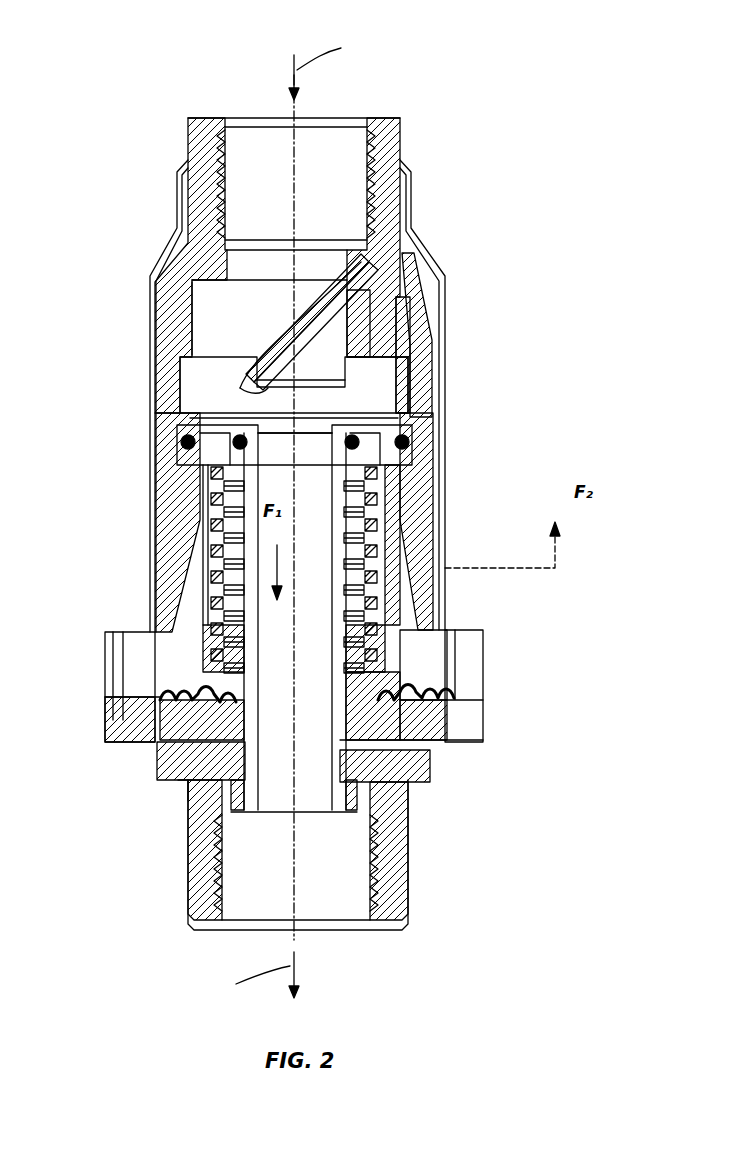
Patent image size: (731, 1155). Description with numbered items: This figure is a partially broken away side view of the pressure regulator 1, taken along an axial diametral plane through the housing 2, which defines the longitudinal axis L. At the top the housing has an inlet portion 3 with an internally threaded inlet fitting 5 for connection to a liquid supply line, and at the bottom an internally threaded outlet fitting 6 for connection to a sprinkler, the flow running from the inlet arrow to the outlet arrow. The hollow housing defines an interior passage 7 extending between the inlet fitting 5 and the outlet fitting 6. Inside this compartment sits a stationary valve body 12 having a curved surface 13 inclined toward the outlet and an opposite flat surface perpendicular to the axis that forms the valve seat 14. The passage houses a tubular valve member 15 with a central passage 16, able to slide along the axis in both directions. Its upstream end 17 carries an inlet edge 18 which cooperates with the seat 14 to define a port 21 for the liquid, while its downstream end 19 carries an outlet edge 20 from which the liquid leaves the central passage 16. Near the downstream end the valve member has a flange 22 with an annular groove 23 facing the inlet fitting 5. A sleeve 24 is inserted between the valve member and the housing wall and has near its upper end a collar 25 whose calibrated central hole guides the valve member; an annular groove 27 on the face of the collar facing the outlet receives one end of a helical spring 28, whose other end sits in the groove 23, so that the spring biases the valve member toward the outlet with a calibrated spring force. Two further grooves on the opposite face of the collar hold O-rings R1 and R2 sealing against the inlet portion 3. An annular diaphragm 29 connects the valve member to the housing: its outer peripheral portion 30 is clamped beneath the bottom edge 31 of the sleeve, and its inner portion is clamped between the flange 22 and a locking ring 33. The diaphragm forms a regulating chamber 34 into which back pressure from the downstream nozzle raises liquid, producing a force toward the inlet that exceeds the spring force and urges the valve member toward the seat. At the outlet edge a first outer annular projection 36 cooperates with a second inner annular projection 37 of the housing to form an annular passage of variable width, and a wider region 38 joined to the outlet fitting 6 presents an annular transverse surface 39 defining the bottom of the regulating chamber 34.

The pressure regulator 1 is at (448, 122).
The housing 2 is at (178, 168).
The inlet portion 3 is at (165, 255).
The inlet fitting 5 is at (370, 150).
The outlet fitting 6 is at (352, 906).
The interior passage 7 is at (233, 321).
The stationary valve body 12 is at (337, 331).
The curved surface 13 is at (262, 345).
The valve seat 14 is at (398, 346).
The tubular valve member 15 is at (350, 522).
The central passage 16 is at (326, 693).
The upstream end 17 is at (400, 484).
The inlet edge 18 is at (395, 408).
The downstream end 19 is at (328, 794).
The outlet edge 20 is at (363, 865).
The port 21 is at (257, 402).
The flange 22 is at (175, 688).
The annular groove 23 is at (192, 694).
The sleeve 24 is at (175, 593).
The collar 25 is at (210, 465).
The annular groove 27 is at (200, 485).
The helical spring 28 is at (215, 536).
The annular diaphragm 29 is at (110, 733).
The outer peripheral portion 30 is at (445, 690).
The bottom edge 31 is at (462, 652).
The locking ring 33 is at (425, 752).
The regulating chamber 34 is at (162, 752).
The first outer annular projection 36 is at (238, 808).
The second inner annular projection 37 is at (188, 820).
The wider region 38 is at (180, 783).
The annular transverse surface 39 is at (387, 725).
The O-ring R1 is at (415, 439).
The O-ring R2 is at (186, 436).